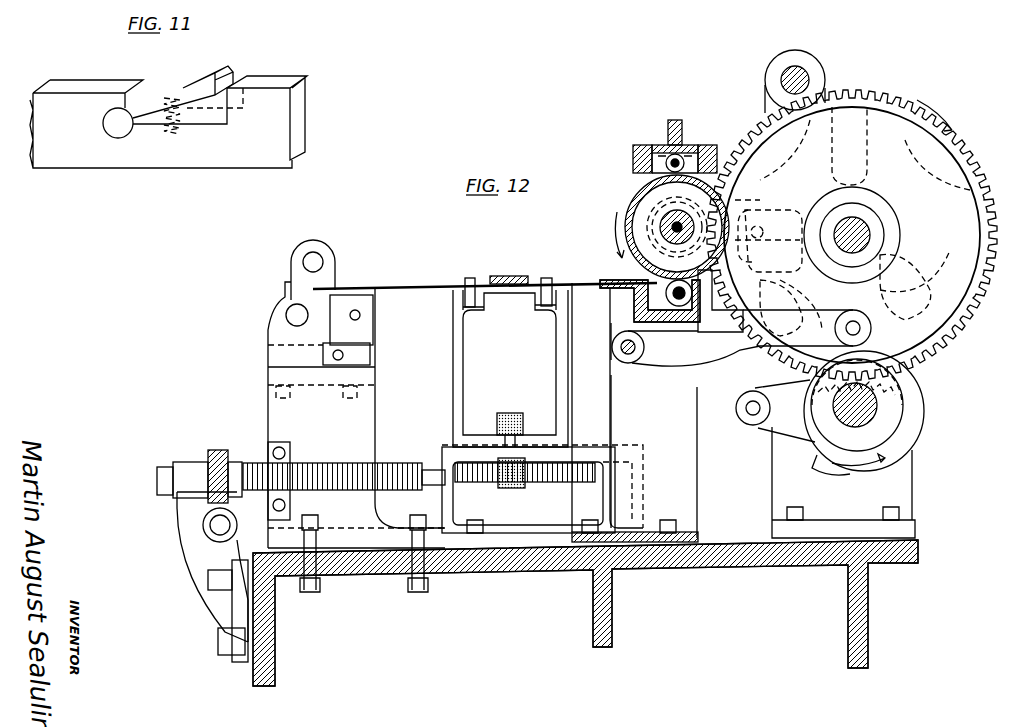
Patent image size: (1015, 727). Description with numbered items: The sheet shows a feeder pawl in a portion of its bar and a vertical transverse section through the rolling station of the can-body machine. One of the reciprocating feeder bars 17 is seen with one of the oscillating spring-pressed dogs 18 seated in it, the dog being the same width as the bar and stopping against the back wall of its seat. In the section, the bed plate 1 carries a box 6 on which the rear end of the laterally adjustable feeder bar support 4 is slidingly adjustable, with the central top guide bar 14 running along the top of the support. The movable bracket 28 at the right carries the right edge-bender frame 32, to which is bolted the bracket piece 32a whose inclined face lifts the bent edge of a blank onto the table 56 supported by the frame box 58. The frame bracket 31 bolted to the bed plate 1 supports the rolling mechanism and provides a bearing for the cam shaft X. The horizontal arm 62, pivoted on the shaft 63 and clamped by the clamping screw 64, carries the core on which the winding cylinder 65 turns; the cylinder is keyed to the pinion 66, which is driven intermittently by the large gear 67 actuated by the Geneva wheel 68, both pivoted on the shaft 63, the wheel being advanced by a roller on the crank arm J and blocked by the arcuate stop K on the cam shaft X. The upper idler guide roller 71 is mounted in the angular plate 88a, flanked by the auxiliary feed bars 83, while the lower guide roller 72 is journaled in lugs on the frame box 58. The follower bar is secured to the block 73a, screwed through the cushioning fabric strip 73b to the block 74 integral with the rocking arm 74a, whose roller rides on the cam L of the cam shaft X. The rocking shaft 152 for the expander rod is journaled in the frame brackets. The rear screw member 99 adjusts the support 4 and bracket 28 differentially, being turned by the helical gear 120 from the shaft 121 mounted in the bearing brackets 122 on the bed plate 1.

In FIG. 12, the bed plate 1 is at (556, 562).
In FIG. 12, the feeder bar support 4 is at (462, 366).
In FIG. 12, the box 6 is at (450, 497).
In FIG. 12, the central top guide bar 14 is at (508, 276).
In FIG. 11, the reciprocating feeder bars 17 is at (235, 150).
In FIG. 12, the reciprocating feeder bars 17 is at (545, 300).
In FIG. 11, the oscillating spring-pressed dogs 18 is at (230, 74).
In FIG. 12, the oscillating spring-pressed dogs 18 is at (468, 278).
In FIG. 12, the movable bracket 28 is at (363, 424).
In FIG. 12, the frame bracket 31 is at (895, 478).
In FIG. 12, the right edge-bender frame 32 is at (326, 268).
In FIG. 12, the bracket piece 32a is at (363, 330).
In FIG. 12, the table 56 is at (392, 294).
In FIG. 12, the frame box 58 is at (620, 384).
In FIG. 12, the horizontal arm 62 is at (800, 196).
In FIG. 12, the shaft 63 is at (868, 240).
In FIG. 12, the clamping screw 64 is at (764, 236).
In FIG. 12, the winding cylinder 65 is at (632, 196).
In FIG. 12, the pinion 66 is at (640, 203).
In FIG. 12, the large gear 67 is at (853, 99).
In FIG. 12, the Geneva wheel 68 is at (900, 110).
In FIG. 12, the upper idler guide roller 71 is at (688, 148).
In FIG. 12, the lower guide roller 72 is at (680, 308).
In FIG. 12, the block 73a is at (677, 304).
In FIG. 12, the cushioning fabric strip 73b is at (706, 302).
In FIG. 12, the block 74 is at (712, 322).
In FIG. 12, the rocking arm 74a is at (742, 356).
In FIG. 12, the upper or auxiliary feed bars 83 is at (648, 152).
In FIG. 12, the angular plate 88a is at (675, 118).
In FIG. 12, the rear screw member 99 is at (394, 462).
In FIG. 12, the helical gears 120 is at (216, 455).
In FIG. 12, the shaft 121 is at (214, 530).
In FIG. 12, the bearing brackets 122 is at (195, 580).
In FIG. 12, the rocking shaft 152 is at (810, 82).
In FIG. 12, the crank arm J is at (784, 420).
In FIG. 12, the arcuate stop K is at (916, 418).
In FIG. 12, the cam L is at (893, 397).
In FIG. 12, the cam shaft X is at (868, 400).